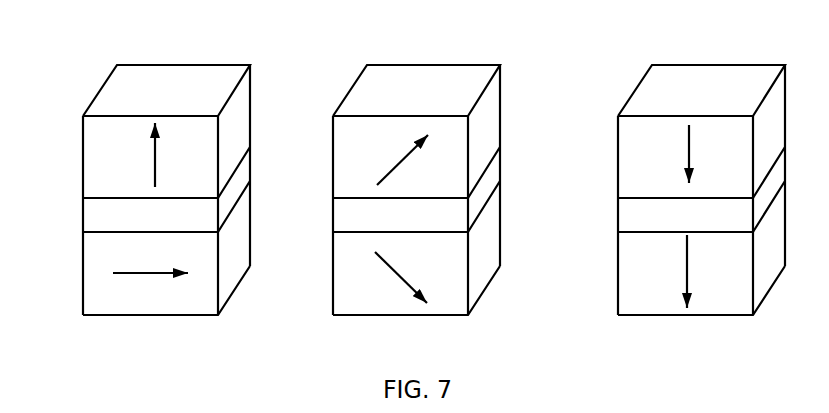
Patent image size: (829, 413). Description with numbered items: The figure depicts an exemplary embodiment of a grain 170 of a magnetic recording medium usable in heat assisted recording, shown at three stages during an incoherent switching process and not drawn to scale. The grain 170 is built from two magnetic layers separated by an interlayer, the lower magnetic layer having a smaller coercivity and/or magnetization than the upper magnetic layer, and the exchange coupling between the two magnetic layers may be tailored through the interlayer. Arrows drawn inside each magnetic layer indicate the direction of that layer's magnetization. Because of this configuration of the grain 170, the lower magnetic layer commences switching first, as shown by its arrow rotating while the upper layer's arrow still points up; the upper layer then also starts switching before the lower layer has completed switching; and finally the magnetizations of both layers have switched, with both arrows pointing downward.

The grain 170 is at (702, 58).